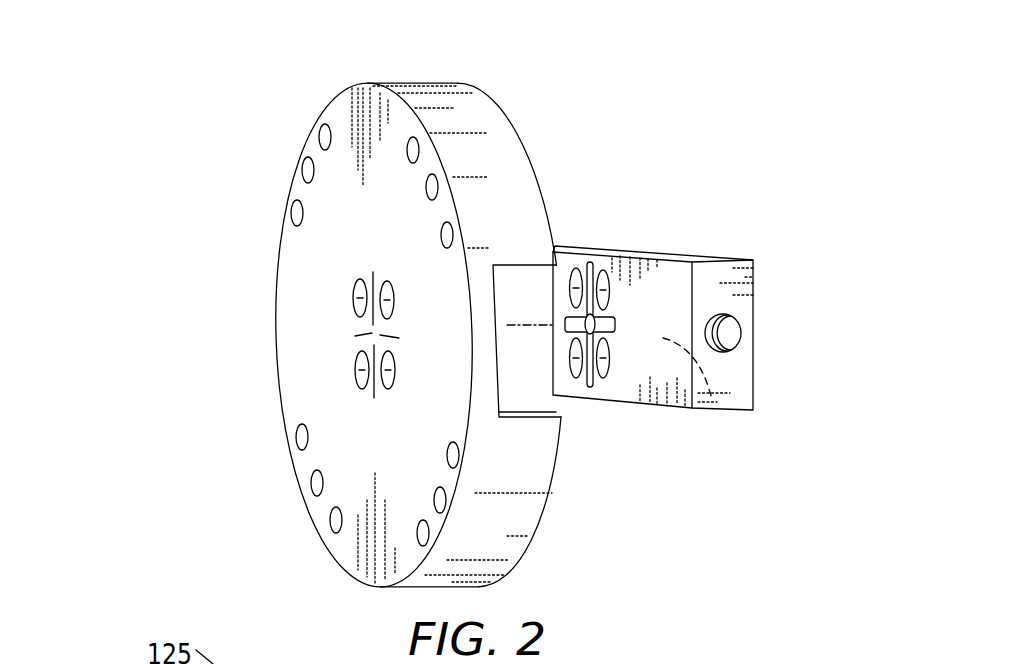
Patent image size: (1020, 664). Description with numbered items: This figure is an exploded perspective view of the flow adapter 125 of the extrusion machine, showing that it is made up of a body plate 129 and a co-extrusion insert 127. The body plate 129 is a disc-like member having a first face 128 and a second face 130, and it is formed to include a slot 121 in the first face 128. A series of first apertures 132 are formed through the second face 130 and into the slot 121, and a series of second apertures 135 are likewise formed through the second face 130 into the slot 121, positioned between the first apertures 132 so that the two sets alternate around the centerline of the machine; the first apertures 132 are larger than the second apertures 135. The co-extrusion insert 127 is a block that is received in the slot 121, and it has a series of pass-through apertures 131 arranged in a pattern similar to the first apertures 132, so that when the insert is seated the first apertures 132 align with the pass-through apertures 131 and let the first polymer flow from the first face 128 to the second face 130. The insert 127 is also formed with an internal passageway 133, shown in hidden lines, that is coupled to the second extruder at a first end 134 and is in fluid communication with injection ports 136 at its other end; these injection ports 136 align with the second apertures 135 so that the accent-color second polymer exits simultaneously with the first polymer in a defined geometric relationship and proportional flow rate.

The flow adapter 125 is at (152, 125).
The body plate 129 is at (318, 90).
The second face 130 is at (305, 277).
The first face 128 is at (525, 147).
The slot 121 is at (525, 412).
The first apertures 132 is at (353, 363).
The second apertures 135 is at (355, 336).
The co-extrusion insert 127 is at (735, 232).
The pass-through apertures 131 is at (605, 285).
The injection ports 136 is at (617, 330).
The first end 134 is at (733, 337).
The internal passageway 133 is at (712, 400).